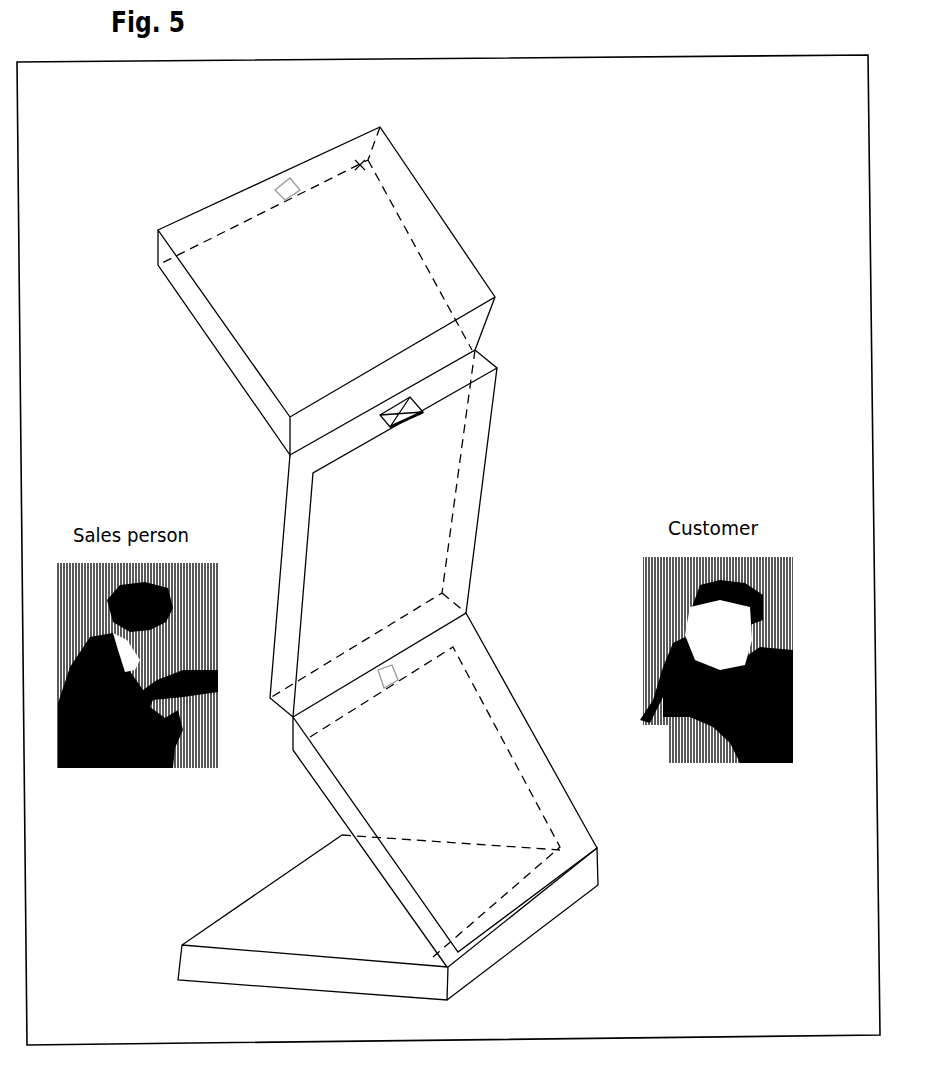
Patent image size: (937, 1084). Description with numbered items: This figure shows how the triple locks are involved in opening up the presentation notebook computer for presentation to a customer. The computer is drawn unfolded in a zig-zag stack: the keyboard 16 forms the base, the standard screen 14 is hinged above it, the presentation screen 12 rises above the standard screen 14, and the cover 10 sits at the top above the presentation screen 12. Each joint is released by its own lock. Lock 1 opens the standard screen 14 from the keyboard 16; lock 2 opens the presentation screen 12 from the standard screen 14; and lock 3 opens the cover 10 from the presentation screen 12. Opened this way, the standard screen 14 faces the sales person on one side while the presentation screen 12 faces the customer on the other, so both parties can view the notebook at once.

The lock 1 is at (400, 680).
The lock 2 is at (405, 405).
The lock 3 is at (298, 180).
The cover 10 is at (370, 263).
The presentation screen 12 is at (395, 490).
The standard screen 14 is at (463, 798).
The keyboard 16 is at (363, 887).